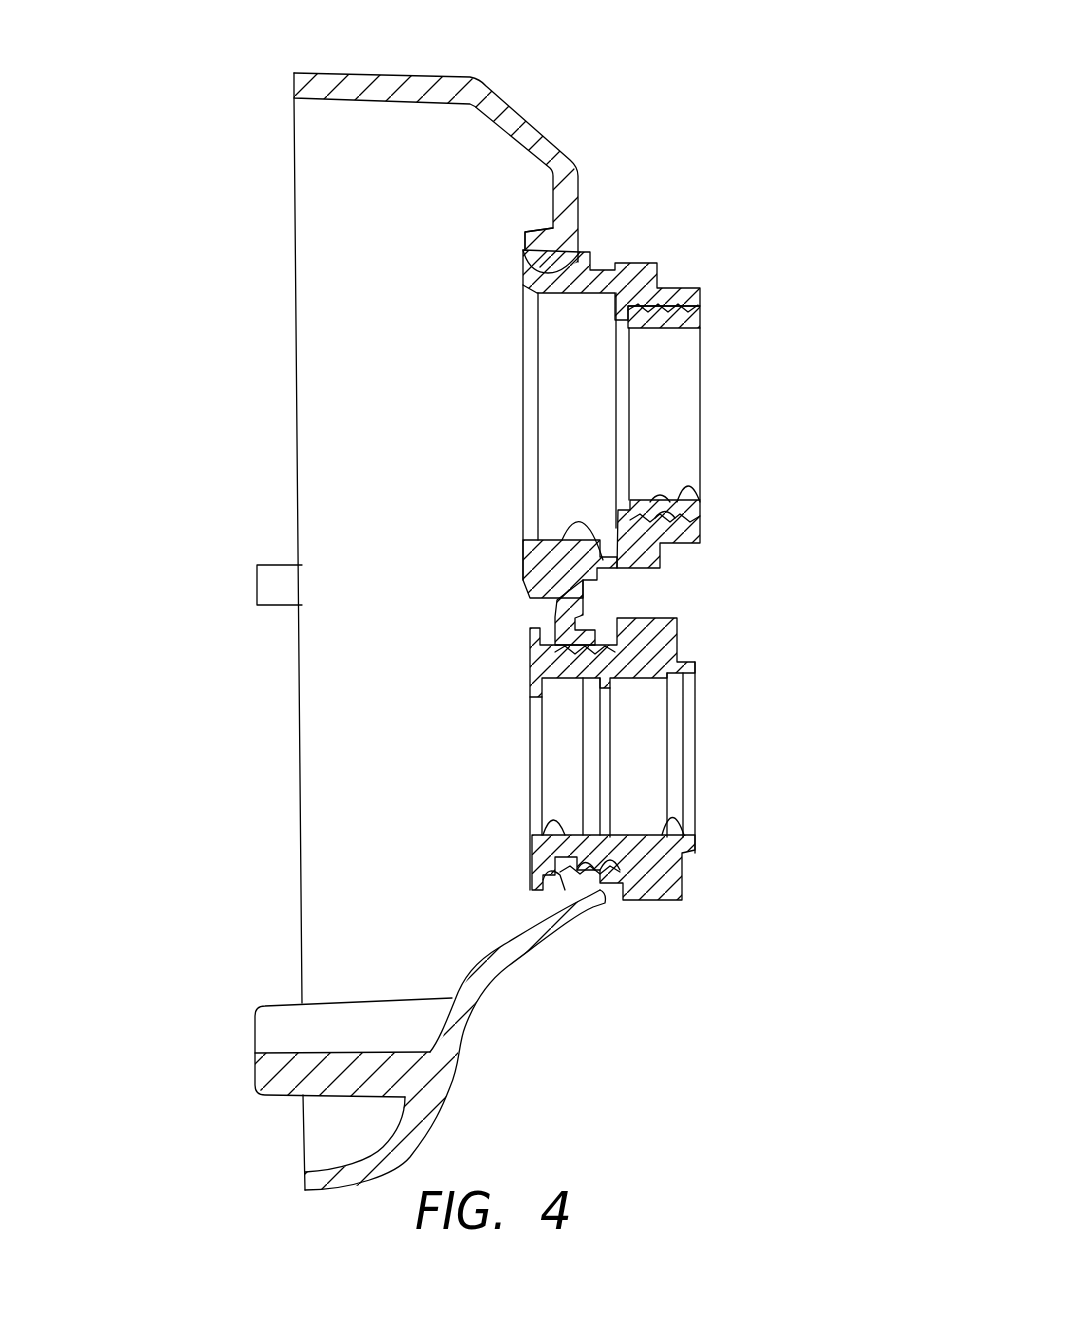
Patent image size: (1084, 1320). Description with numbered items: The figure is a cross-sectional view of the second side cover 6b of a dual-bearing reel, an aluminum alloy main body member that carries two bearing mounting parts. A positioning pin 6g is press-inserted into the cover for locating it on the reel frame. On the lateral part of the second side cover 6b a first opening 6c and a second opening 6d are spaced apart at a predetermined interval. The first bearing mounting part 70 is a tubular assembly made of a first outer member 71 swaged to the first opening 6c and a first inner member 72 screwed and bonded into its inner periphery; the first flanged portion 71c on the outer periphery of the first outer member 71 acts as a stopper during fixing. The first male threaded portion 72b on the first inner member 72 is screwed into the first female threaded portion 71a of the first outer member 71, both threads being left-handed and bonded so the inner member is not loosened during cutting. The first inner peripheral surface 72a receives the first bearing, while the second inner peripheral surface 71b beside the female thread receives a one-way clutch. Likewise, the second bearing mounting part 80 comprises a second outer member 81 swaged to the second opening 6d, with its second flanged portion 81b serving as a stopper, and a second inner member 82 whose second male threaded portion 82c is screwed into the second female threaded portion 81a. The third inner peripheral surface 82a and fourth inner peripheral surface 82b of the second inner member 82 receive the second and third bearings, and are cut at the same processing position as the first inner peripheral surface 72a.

The second side cover 6b is at (540, 90).
The first opening 6c is at (566, 268).
The second opening 6d is at (580, 880).
The positioning pin 6g is at (273, 581).
The first bearing mounting part 70 is at (700, 236).
The first outer member 71 is at (683, 281).
The first female threaded portion 71a is at (662, 516).
The second inner peripheral surface 71b is at (590, 525).
The first flanged portion 71c is at (562, 285).
The first inner member 72 is at (710, 322).
The first inner peripheral surface 72a is at (686, 490).
The first male threaded portion 72b is at (666, 518).
The second bearing mounting part 80 is at (732, 790).
The second outer member 81 is at (707, 887).
The second female threaded portion 81a is at (631, 843).
The second flanged portion 81b is at (583, 872).
The second inner member 82 is at (700, 847).
The third inner peripheral surface 82a is at (683, 847).
The fourth inner peripheral surface 82b is at (552, 885).
The second male threaded portion 82c is at (600, 872).